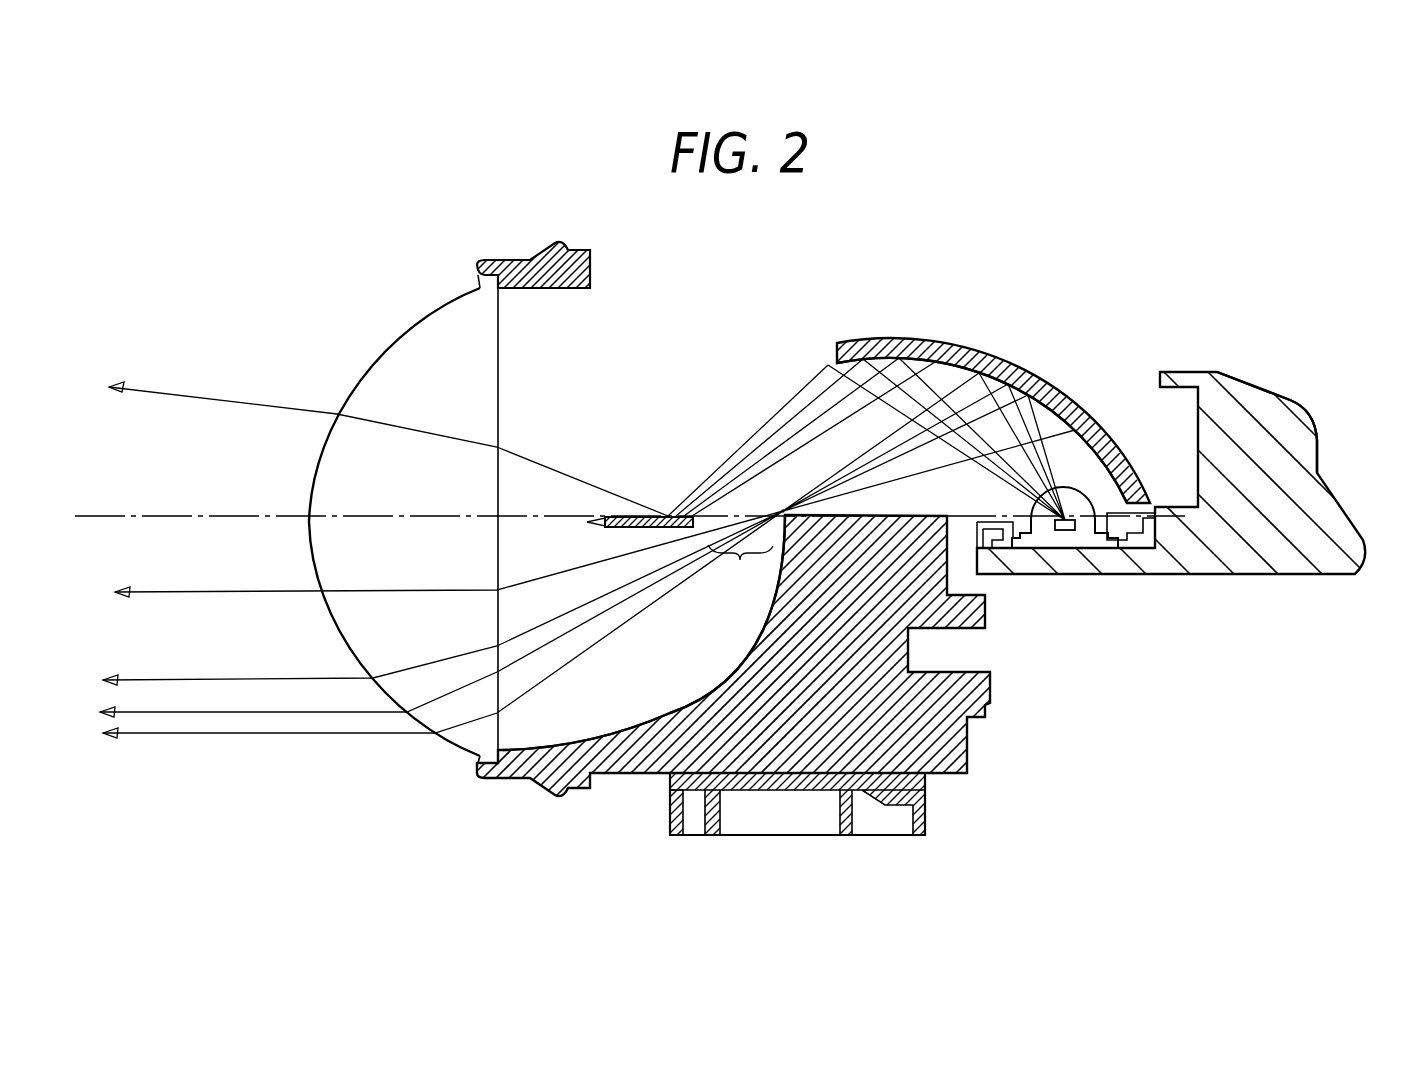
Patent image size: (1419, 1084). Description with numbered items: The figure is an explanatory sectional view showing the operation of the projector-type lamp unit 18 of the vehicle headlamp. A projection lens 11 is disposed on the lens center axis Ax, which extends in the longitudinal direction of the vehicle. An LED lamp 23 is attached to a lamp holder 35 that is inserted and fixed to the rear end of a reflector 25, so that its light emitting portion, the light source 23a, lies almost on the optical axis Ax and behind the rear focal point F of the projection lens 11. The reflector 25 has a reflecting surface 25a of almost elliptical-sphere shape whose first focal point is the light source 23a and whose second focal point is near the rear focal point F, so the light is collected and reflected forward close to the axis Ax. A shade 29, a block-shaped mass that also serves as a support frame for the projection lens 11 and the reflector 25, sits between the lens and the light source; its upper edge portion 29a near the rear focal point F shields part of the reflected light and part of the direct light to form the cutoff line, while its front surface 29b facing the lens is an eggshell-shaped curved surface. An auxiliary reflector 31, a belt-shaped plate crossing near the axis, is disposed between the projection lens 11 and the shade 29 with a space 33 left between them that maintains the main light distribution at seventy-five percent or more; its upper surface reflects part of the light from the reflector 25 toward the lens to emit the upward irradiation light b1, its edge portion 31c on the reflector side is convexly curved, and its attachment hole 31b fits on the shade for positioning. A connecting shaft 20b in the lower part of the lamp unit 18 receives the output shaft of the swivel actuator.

The projection lens 11 is at (416, 375).
The lamp unit 18 is at (1180, 317).
The connecting shaft 20b is at (927, 793).
The LED lamp 23 is at (1093, 489).
The light source 23a is at (1067, 532).
The reflector 25 is at (963, 341).
The reflecting surface 25a is at (1040, 406).
The shade 29 is at (668, 711).
The edge portion 29a is at (786, 514).
The front surface 29b is at (607, 728).
The auxiliary reflector 31 is at (587, 523).
The attachment hole 31b is at (630, 513).
The edge portion 31c is at (707, 513).
The space 33 is at (740, 571).
The lamp holder 35 is at (1313, 411).
The lens center axis Ax is at (169, 503).
The rear focal point F is at (775, 512).
The upward irradiation light b1 is at (228, 383).